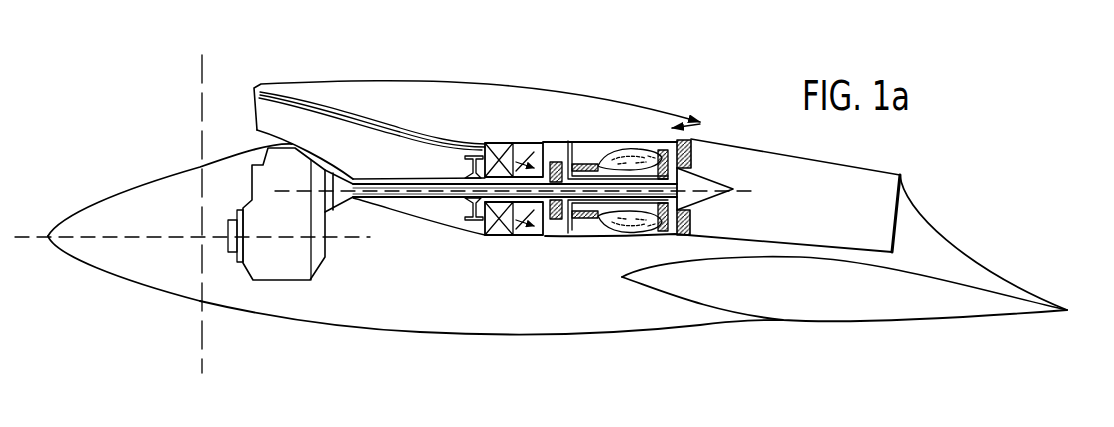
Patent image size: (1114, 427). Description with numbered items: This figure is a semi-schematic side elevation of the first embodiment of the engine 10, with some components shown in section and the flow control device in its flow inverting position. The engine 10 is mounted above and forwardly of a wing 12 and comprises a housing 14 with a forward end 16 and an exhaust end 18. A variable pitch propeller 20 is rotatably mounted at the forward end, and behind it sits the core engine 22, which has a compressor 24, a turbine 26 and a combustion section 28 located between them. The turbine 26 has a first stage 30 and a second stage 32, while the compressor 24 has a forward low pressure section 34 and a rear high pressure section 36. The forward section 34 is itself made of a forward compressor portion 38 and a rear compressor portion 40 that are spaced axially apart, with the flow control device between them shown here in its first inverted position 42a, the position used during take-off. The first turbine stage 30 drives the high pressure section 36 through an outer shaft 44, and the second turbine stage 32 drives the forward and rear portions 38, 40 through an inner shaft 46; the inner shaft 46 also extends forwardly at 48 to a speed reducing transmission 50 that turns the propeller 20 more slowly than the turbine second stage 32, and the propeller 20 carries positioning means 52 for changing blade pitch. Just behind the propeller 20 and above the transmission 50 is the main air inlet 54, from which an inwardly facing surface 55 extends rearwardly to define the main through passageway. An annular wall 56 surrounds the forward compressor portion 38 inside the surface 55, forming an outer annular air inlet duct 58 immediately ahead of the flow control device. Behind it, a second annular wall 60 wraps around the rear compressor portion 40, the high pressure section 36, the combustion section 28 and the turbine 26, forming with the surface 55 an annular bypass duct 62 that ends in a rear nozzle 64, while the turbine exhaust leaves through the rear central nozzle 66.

The engine 10 is at (493, 345).
The wing 12 is at (920, 312).
The housing 14 is at (310, 328).
The forward end 16 is at (277, 312).
The exhaust end 18 is at (933, 243).
The variable pitch propeller 20 is at (205, 78).
The core engine 22 is at (590, 252).
The compressor 24 is at (585, 158).
The turbine 26 is at (688, 132).
The combustion section 28 is at (618, 150).
The turbine first stage 30 is at (676, 115).
The turbine second stage 32 is at (695, 160).
The forward low pressure compressor section 34 is at (553, 160).
The rear high pressure compressor section 36 is at (570, 228).
The forward compressor portion 38 is at (470, 168).
The rear compressor portion 40 is at (556, 222).
The first inverted position of flow control device 42a is at (503, 238).
The outer shaft 44 is at (590, 216).
The inner shaft 46 is at (637, 192).
The forward extension of inner shaft 48 is at (403, 197).
The speed reducing transmission 50 is at (312, 270).
The positioning means 52 is at (127, 190).
The main air inlet 54 is at (255, 112).
The inwardly facing surface 55 is at (380, 128).
The annular wall 56 is at (463, 156).
The outer annular air inlet duct 58 is at (475, 148).
The second annular wall 60 is at (565, 152).
The annular bypass duct 62 is at (662, 150).
The rear nozzle 64 is at (692, 139).
The rear central nozzle 66 is at (900, 212).